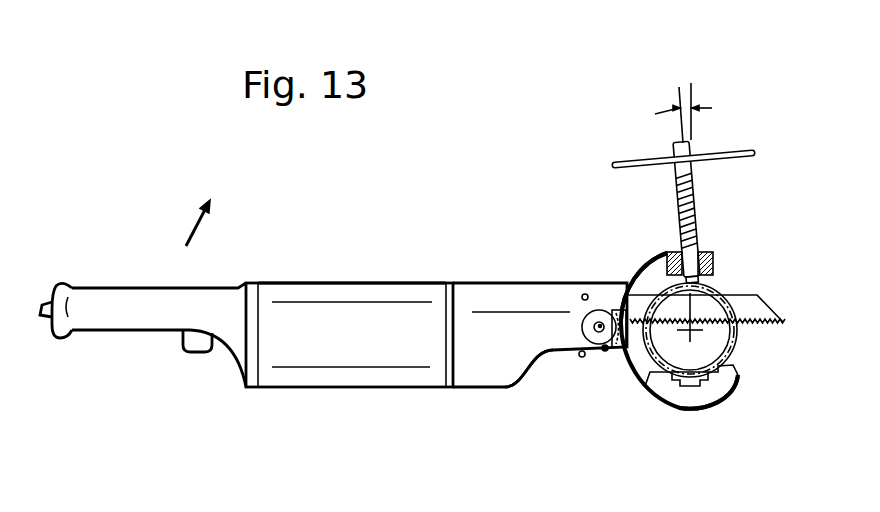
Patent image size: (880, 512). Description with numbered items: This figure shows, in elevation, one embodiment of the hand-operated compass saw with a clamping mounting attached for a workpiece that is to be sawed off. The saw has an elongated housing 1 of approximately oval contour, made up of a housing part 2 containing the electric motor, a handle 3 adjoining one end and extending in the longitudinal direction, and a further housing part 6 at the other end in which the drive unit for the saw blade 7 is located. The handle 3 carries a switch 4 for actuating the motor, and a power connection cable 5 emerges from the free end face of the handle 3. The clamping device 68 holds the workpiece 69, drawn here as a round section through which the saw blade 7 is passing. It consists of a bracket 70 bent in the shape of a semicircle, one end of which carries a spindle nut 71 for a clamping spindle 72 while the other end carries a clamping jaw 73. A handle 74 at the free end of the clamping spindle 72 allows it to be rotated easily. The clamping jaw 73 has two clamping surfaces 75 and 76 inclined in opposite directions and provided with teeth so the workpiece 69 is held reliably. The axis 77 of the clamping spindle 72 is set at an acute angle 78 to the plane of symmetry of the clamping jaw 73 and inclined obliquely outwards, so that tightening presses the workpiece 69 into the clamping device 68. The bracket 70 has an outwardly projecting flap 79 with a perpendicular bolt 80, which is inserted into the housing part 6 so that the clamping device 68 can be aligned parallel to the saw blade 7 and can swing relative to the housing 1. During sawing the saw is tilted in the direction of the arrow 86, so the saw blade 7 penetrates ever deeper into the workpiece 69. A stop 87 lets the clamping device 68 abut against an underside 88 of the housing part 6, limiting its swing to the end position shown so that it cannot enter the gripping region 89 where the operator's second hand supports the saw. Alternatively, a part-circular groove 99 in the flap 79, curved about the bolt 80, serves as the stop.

The housing 1 is at (361, 270).
The housing part 2 is at (294, 357).
The handle 3 is at (130, 300).
The switch 4 is at (193, 346).
The power connection cable 5 is at (46, 303).
The further housing part 6 is at (510, 292).
The saw blade 7 is at (738, 300).
The clamping device 68 is at (689, 155).
The workpiece 69 is at (737, 357).
The bracket 70 is at (647, 270).
The spindle nut 71 is at (670, 249).
The clamping spindle 72 is at (700, 207).
The clamping jaw 73 is at (682, 402).
The handle 74 is at (623, 160).
The clamping surface 75 is at (668, 386).
The clamping surface 76 is at (716, 400).
The axis 77 is at (678, 90).
The acute angle 78 is at (691, 88).
The flap 79 is at (583, 318).
The bolt 80 is at (583, 331).
The arrow 86 is at (188, 244).
The stop 87 is at (580, 357).
The underside 88 is at (606, 352).
The gripping region 89 is at (518, 368).
The groove 99 is at (613, 310).